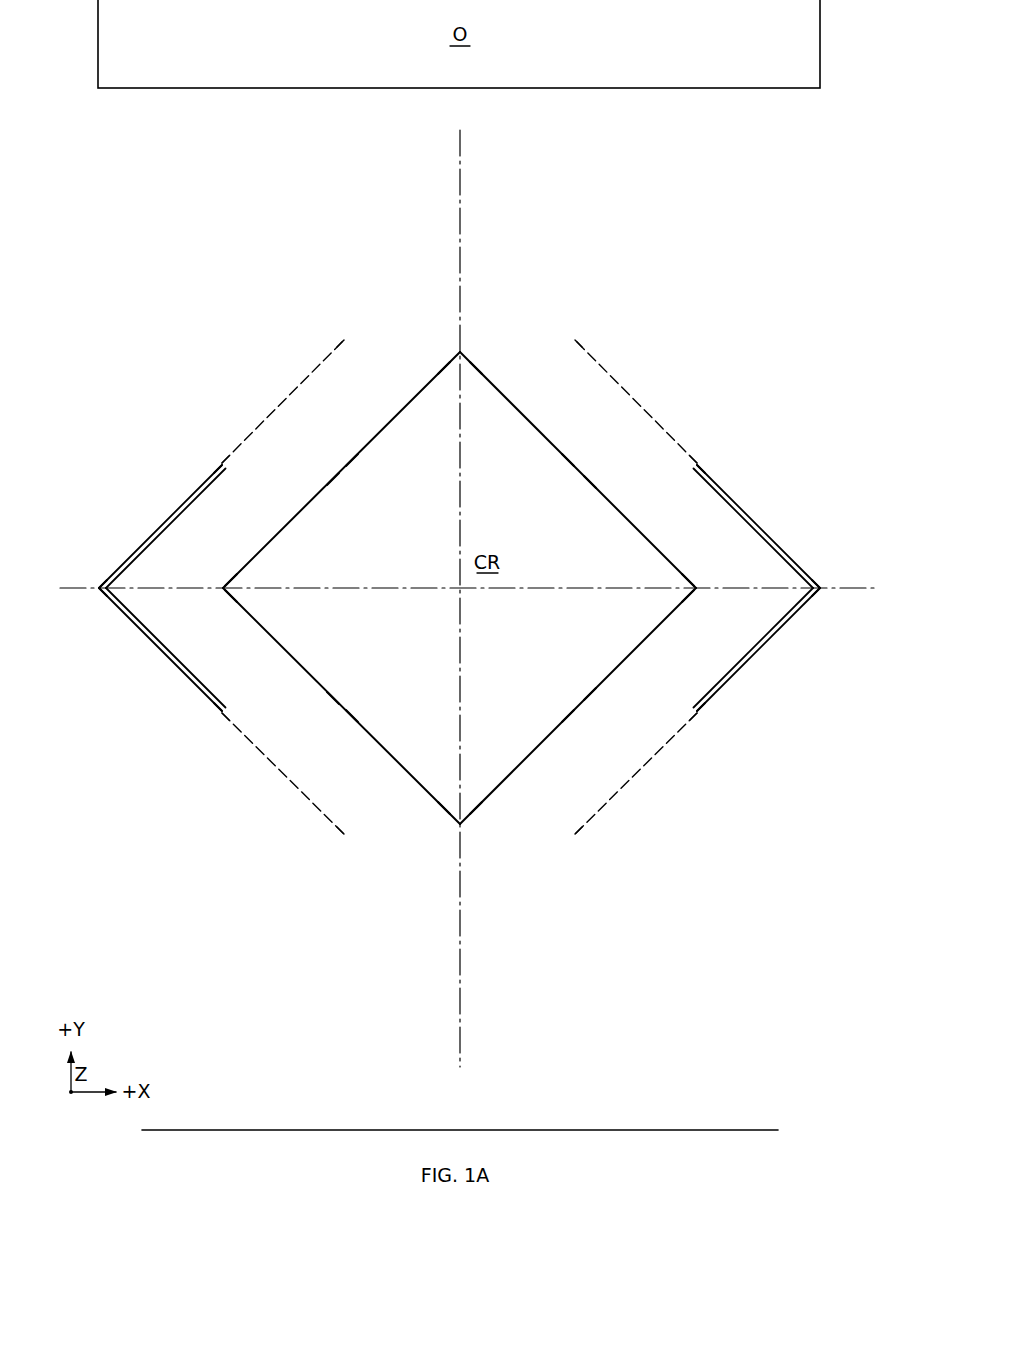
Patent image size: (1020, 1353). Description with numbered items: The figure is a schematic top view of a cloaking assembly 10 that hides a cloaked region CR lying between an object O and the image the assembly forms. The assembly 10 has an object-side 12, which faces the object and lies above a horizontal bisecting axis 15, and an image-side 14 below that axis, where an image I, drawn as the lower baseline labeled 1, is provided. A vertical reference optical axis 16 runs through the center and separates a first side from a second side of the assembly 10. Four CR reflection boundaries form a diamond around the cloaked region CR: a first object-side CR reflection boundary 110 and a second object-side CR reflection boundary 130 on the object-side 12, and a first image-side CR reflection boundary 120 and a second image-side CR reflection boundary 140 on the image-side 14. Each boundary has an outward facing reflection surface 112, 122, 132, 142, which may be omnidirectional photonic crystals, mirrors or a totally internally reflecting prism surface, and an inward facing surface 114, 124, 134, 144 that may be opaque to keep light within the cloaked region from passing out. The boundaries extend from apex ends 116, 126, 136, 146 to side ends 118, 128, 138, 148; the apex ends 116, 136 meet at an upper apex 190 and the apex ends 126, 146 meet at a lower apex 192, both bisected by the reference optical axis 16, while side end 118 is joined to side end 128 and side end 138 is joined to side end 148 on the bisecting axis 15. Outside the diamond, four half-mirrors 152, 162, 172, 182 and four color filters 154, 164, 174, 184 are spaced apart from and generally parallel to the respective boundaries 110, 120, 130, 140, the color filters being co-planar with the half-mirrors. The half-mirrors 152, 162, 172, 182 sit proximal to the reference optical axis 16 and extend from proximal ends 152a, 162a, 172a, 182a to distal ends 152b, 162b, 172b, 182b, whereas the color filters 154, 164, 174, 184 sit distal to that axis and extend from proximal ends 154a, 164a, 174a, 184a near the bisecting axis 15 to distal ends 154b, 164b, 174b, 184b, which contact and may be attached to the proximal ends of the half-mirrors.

The ground plane 1 is at (741, 1129).
The cloaking assembly 10 is at (813, 182).
The object-side 12 is at (813, 290).
The image-side 14 is at (730, 835).
The bisecting axis 15 is at (876, 590).
The reference optical axis 16 is at (462, 159).
The first object-side CR reflection boundary 110 is at (576, 472).
The outward facing reflection surface 112 is at (591, 482).
The inward facing surface 114 is at (567, 461).
The apex end 116 is at (475, 369).
The side end 118 is at (688, 580).
The first image-side CR reflection boundary 120 is at (576, 704).
The outward facing reflection surface 122 is at (591, 694).
The inward facing surface 124 is at (567, 716).
The apex end 126 is at (476, 808).
The side end 128 is at (688, 596).
The second object-side CR reflection boundary 130 is at (346, 472).
The outward facing reflection surface 132 is at (333, 478).
The inward facing surface 134 is at (352, 461).
The apex end 136 is at (444, 369).
The side end 138 is at (230, 583).
The second image-side CR reflection boundary 140 is at (346, 704).
The outward facing reflection surface 142 is at (333, 698).
The inward facing surface 144 is at (353, 717).
The apex end 146 is at (444, 808).
The side end 148 is at (230, 593).
The first object-side half-mirror 152 is at (620, 384).
The proximal end 152a is at (678, 441).
The distal end 152b is at (578, 340).
The first object-side color filter 154 is at (751, 514).
The proximal end 154a is at (818, 586).
The distal end 154b is at (704, 464).
The first image-side half-mirror 162 is at (619, 791).
The proximal end 162a is at (681, 731).
The distal end 162b is at (578, 834).
The first image-side color filter 164 is at (751, 662).
The proximal end 164a is at (813, 598).
The distal end 164b is at (704, 712).
The second object-side half-mirror 172 is at (299, 384).
The proximal end 172a is at (241, 441).
The distal end 172b is at (341, 340).
The second object-side color filter 174 is at (168, 514).
The proximal end 174a is at (101, 586).
The distal end 174b is at (215, 464).
The second image-side half-mirror 182 is at (300, 791).
The proximal end 182a is at (238, 731).
The distal end 182b is at (341, 834).
The second image-side color filter 184 is at (168, 662).
The proximal end 184a is at (106, 598).
The distal end 184b is at (215, 712).
The apex 190 is at (462, 352).
The apex 192 is at (462, 825).